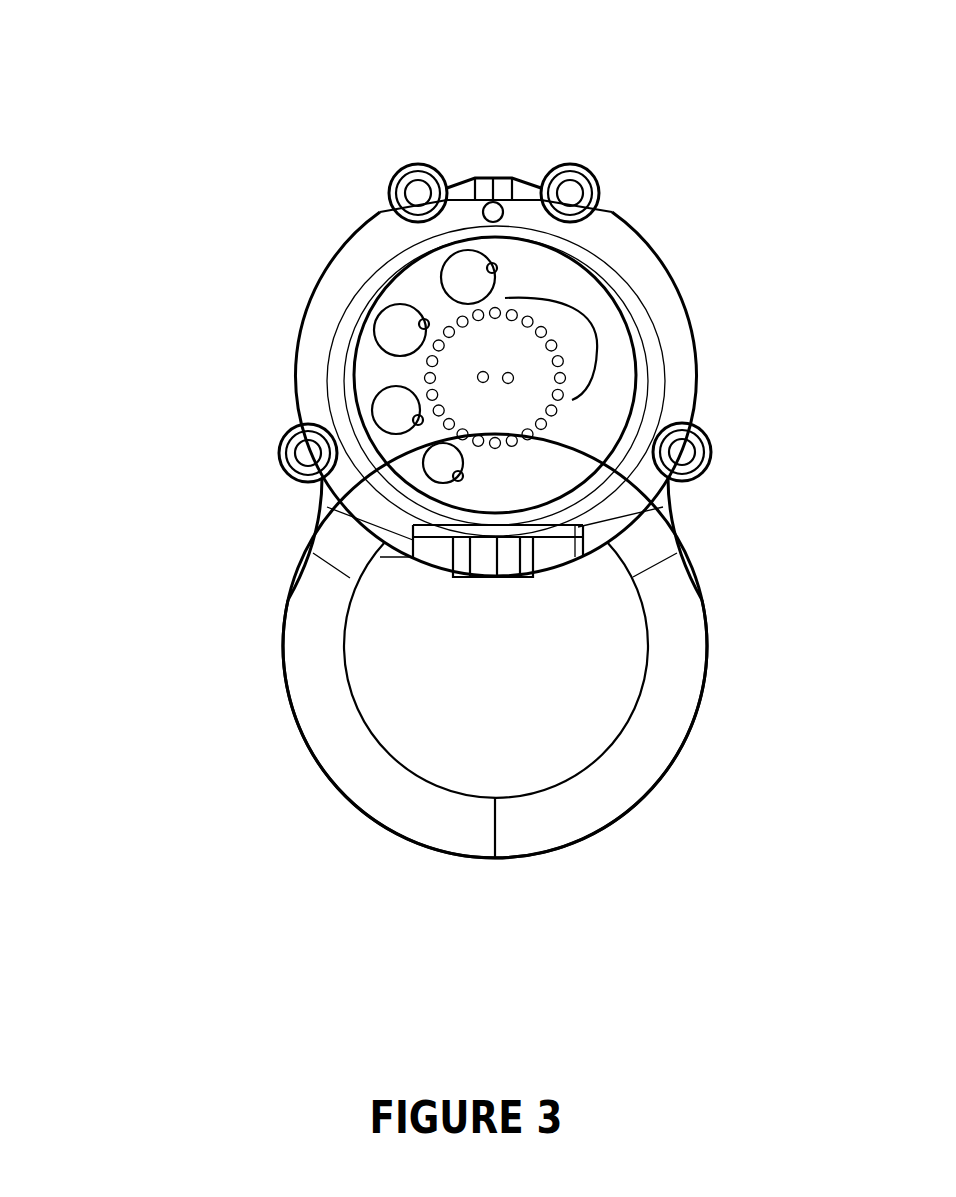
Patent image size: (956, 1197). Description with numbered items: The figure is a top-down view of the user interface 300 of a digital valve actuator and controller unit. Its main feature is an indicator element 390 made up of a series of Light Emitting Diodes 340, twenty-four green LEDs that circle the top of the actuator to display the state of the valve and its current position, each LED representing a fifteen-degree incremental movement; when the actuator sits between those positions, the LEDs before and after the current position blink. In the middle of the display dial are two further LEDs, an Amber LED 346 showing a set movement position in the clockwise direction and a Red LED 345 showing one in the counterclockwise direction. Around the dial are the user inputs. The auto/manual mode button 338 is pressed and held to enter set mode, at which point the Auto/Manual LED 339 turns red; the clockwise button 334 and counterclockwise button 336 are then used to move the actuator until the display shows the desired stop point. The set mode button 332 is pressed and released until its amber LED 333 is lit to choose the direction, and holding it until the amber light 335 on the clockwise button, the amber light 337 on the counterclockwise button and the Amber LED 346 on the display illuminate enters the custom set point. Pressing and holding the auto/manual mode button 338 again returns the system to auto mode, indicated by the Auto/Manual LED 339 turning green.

The user interface 300 is at (640, 837).
The indicator element 390 is at (440, 315).
The auto/manual mode button 338 is at (477, 265).
The Auto/Manual LED 339 is at (498, 268).
The Light Emitting Diodes 340 is at (597, 322).
The Amber LED 346 is at (500, 364).
The Red LED 345 is at (518, 386).
The counterclockwise button 336 is at (388, 333).
The amber light 337 is at (420, 322).
The clockwise button 334 is at (395, 417).
The amber light 335 is at (415, 410).
The set mode button 332 is at (430, 474).
The amber LED 333 is at (446, 485).